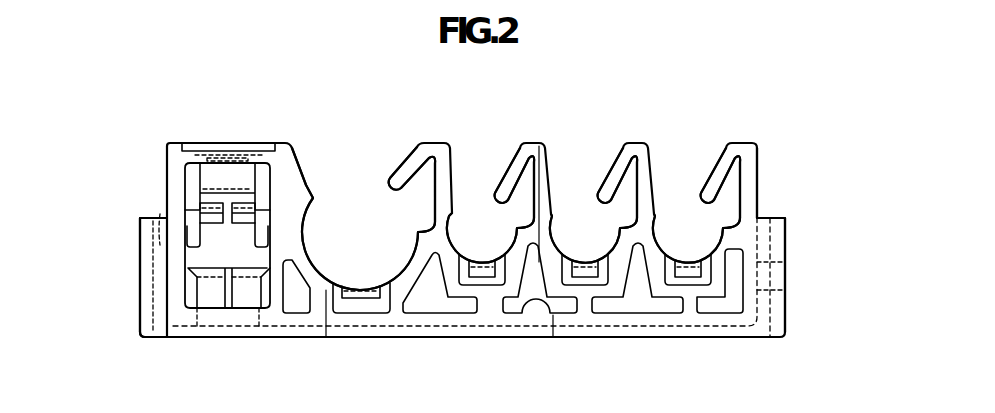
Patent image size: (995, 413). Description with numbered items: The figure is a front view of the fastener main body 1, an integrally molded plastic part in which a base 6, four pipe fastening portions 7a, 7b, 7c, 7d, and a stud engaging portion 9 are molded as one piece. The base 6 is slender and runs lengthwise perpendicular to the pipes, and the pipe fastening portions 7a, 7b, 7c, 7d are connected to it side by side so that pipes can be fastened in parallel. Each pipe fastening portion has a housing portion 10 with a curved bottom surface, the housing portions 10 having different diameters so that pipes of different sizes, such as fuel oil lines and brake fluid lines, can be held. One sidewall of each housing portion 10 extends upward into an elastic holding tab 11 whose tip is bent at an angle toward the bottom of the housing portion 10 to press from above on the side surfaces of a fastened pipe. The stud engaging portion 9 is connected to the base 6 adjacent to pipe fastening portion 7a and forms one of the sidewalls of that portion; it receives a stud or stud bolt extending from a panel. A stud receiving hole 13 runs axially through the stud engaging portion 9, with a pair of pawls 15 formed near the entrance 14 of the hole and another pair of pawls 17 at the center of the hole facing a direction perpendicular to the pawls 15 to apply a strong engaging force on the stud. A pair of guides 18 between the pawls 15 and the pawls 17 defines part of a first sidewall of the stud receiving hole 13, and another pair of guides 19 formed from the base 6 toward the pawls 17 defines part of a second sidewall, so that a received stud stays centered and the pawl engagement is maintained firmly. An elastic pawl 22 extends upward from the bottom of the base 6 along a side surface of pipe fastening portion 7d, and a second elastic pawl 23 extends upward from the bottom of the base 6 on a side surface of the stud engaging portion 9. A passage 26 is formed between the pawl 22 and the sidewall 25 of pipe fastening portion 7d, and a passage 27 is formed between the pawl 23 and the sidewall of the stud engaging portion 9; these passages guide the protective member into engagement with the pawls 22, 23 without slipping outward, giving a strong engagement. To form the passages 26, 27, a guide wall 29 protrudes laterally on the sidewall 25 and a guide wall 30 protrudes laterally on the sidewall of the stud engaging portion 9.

The fastener main body 1 is at (779, 135).
The base 6 is at (287, 322).
The pipe fastening portion 7a is at (362, 198).
The pipe fastening portion 7b is at (480, 203).
The pipe fastening portion 7c is at (582, 203).
The pipe fastening portion 7d is at (685, 203).
The stud engaging portion 9 is at (244, 143).
The housing portion 10 is at (395, 277).
The elastic holding tab 11 is at (395, 163).
The stud receiving hole 13 is at (218, 248).
The entrance 14 is at (202, 150).
The pawls 15 is at (213, 182).
The pawls 17 is at (186, 246).
The guides 18 is at (207, 220).
The guides 19 is at (197, 290).
The elastic pawl 22 is at (762, 228).
The second elastic pawl 23 is at (160, 214).
The sidewall 25 is at (780, 260).
The passage 26 is at (762, 313).
The passage 27 is at (150, 276).
The guide wall 29 is at (785, 288).
The guide wall 30 is at (140, 305).